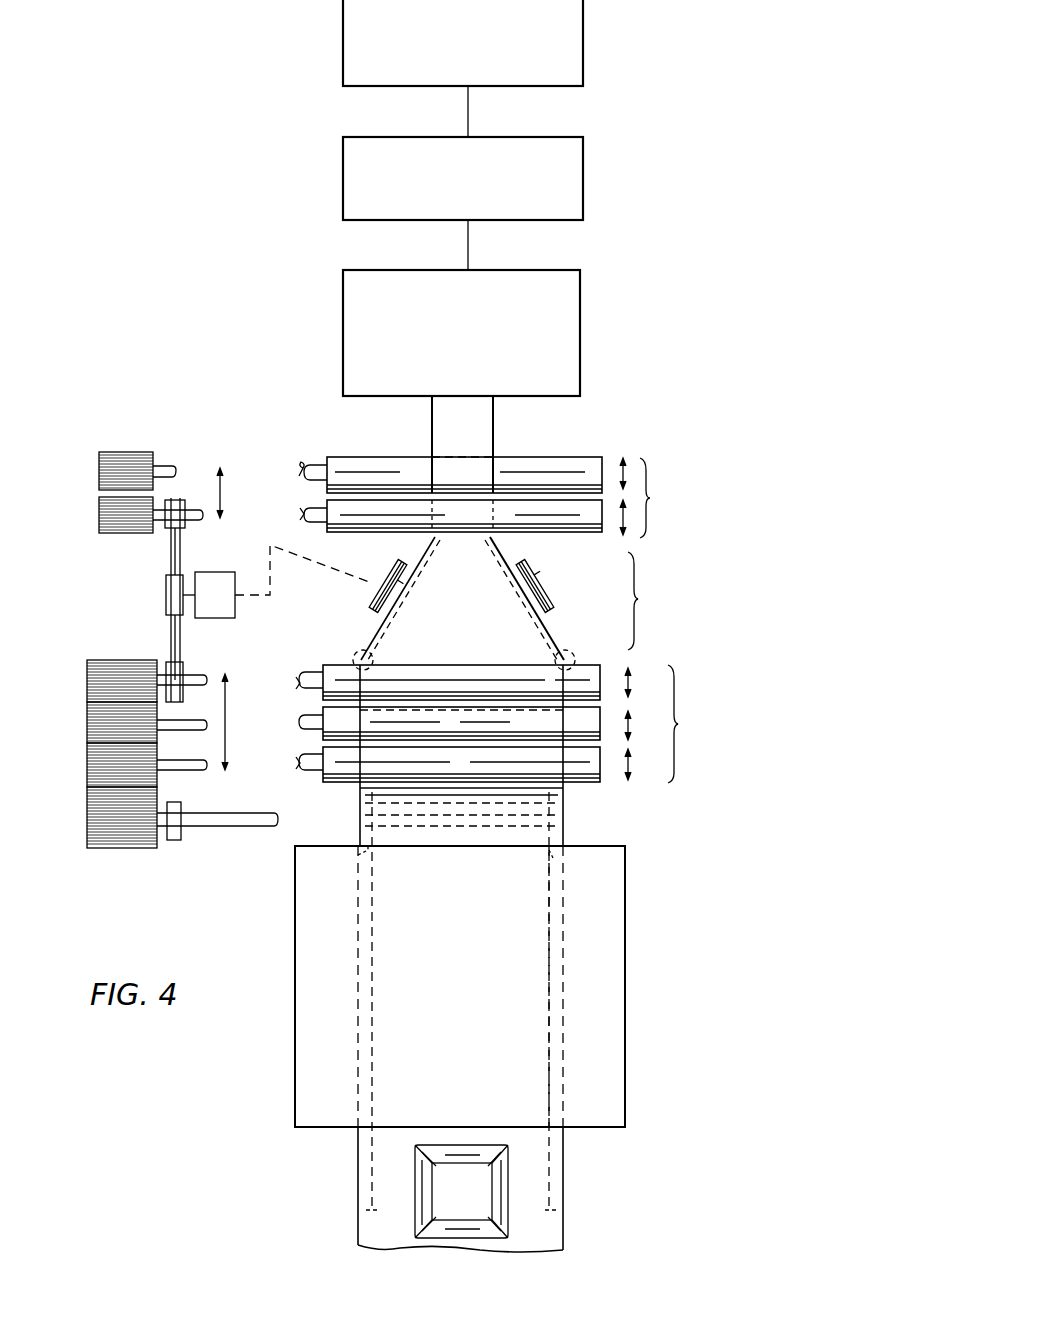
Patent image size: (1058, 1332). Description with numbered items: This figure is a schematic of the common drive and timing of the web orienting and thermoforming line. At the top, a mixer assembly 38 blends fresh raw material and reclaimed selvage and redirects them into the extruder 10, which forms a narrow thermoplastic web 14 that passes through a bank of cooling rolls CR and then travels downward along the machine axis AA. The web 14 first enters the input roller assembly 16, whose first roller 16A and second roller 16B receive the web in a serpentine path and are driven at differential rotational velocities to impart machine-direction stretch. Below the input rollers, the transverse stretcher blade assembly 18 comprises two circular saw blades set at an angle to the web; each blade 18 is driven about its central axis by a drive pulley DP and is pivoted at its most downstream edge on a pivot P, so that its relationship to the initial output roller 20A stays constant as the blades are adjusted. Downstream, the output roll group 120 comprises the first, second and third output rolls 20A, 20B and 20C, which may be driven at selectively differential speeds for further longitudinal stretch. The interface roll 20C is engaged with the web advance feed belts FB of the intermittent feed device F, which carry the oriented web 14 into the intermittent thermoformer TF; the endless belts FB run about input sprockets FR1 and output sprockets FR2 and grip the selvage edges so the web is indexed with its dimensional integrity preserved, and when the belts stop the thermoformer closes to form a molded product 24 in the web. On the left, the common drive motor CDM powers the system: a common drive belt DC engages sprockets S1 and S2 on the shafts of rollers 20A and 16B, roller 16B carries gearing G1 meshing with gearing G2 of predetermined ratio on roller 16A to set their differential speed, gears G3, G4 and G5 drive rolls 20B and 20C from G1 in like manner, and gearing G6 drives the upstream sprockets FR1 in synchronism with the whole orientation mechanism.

The mixer assembly 38 is at (583, 13).
The extruder 10 is at (538, 213).
The cooling rolls CR is at (465, 383).
The web 14 is at (472, 432).
The web axis AA is at (542, 432).
The input roller assembly 16 is at (504, 495).
The first roller 16A is at (558, 466).
The second roller 16B is at (567, 522).
The transverse stretcher blade assembly 18 is at (427, 548).
The common drive belt DC is at (400, 565).
The drive pulleys DP is at (372, 602).
The pivots P is at (355, 656).
The output stretch and interface rolls 120 is at (541, 725).
The first output roll 20A is at (600, 668).
The second output roll 20B is at (560, 710).
The third output roll 20C is at (585, 782).
The intermittent feed device F is at (572, 826).
The web advance feed belts FB is at (360, 800).
The intermittent thermoformer TF is at (627, 1049).
The input sprockets FR1 is at (358, 863).
The output sprockets FR2 is at (370, 1146).
The molded product 24 is at (470, 1202).
The driven output gearing G1 is at (97, 507).
The compatible gearing G2 is at (97, 460).
The gear G3 is at (87, 690).
The gear G4 is at (87, 730).
The gear G5 is at (87, 771).
The gearing G6 is at (89, 822).
The drive sprocket S1 is at (183, 668).
The drive sprocket S2 is at (168, 528).
The common drive motor CDM is at (283, 581).